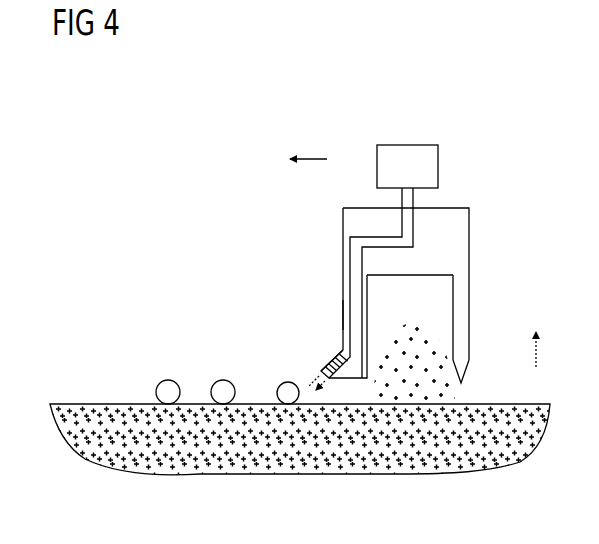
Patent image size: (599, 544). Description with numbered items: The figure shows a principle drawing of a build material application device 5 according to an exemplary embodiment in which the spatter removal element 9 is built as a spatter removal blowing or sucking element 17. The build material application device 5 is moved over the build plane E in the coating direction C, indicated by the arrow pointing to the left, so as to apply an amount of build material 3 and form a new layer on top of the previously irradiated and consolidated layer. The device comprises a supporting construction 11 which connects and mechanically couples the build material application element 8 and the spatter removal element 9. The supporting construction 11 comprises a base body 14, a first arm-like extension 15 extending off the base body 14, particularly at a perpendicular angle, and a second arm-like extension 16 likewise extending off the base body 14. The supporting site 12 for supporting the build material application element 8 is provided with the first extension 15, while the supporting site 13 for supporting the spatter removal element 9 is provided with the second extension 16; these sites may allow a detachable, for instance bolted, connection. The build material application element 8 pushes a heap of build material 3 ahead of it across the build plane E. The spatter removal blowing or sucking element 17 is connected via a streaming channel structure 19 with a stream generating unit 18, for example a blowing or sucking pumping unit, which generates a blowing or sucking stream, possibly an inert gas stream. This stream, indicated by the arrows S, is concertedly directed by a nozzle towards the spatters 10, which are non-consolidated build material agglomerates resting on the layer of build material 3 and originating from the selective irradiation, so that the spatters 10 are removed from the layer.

The build material 3 is at (105, 418).
The build material application device 5 is at (456, 141).
The build material application element 8 is at (466, 372).
The spatter removal element 9 is at (324, 356).
The spatters 10 is at (166, 381).
The supporting construction 11 is at (481, 177).
The supporting site 12 is at (470, 278).
The supporting site 13 is at (343, 280).
The base body 14 is at (366, 208).
The first arm-like extension 15 is at (463, 310).
The second arm-like extension 16 is at (343, 296).
The spatter removal blowing or sucking element 17 is at (337, 356).
The stream generating unit 18 is at (405, 145).
The streaming channel structure 19 is at (350, 252).
The build plane E is at (75, 330).
The coating direction C is at (310, 159).
The blowing or sucking stream S is at (308, 374).